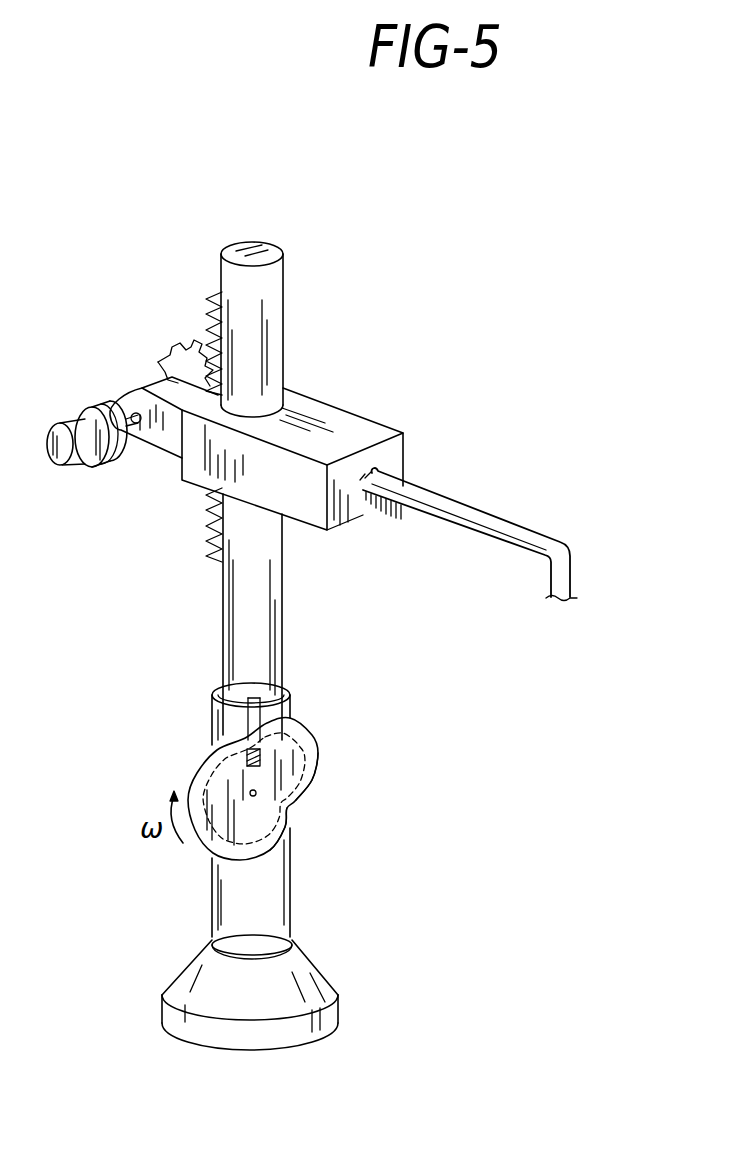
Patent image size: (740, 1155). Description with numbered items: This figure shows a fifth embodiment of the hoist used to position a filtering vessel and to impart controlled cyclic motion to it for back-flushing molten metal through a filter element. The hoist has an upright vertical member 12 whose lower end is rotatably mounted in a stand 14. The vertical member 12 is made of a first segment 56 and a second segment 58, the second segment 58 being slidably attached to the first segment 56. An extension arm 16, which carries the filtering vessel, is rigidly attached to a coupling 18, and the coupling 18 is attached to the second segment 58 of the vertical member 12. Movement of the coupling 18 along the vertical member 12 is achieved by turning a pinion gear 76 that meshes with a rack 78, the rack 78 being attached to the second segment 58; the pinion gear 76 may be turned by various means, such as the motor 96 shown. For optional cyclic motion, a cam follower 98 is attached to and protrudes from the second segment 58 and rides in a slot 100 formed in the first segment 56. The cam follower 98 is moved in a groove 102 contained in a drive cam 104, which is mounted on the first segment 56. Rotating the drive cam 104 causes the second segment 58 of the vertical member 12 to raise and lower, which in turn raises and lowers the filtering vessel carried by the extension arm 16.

The vertical member 12 is at (222, 590).
The stand 14 is at (322, 970).
The extension arm 16 is at (463, 508).
The coupling 18 is at (333, 405).
The first segment 56 is at (212, 880).
The second segment 58 is at (285, 290).
The pinion gear 76 is at (187, 340).
The rack 78 is at (210, 298).
The motor 96 is at (103, 462).
The cam follower 98 is at (310, 718).
The slot 100 is at (255, 697).
The groove 102 is at (310, 787).
The drive cam 104 is at (282, 840).